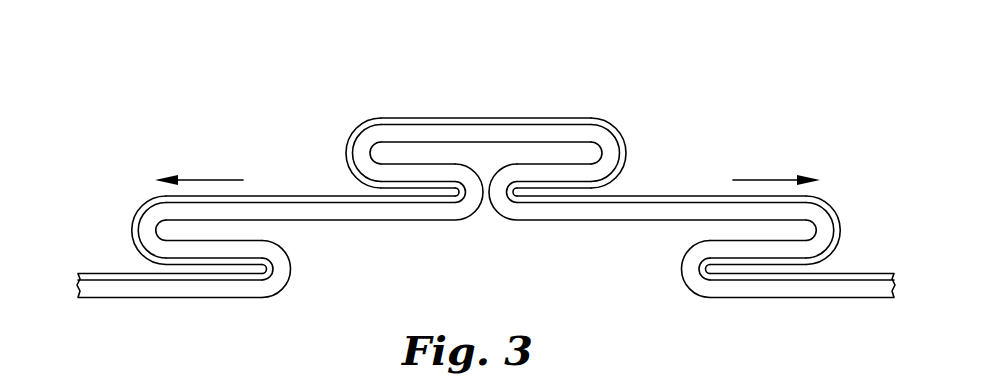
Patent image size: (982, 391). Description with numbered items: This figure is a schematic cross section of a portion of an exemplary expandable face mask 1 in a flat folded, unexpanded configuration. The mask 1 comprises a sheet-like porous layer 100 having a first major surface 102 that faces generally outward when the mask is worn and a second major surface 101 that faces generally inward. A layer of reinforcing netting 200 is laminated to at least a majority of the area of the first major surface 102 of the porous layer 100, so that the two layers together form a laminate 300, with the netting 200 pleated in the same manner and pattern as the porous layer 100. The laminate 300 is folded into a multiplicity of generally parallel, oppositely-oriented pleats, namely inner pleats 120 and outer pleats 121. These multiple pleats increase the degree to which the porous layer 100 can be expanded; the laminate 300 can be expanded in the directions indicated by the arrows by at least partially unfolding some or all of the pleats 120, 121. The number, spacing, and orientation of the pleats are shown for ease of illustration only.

The expandable face mask 1 is at (462, 199).
The porous layer 100 is at (403, 219).
The second major surface 101 is at (546, 223).
The first major surface 102 is at (558, 124).
The inner pleat 120 is at (500, 180).
The outer pleat 121 is at (361, 148).
The reinforcing netting 200 is at (483, 127).
The laminate 300 is at (104, 258).